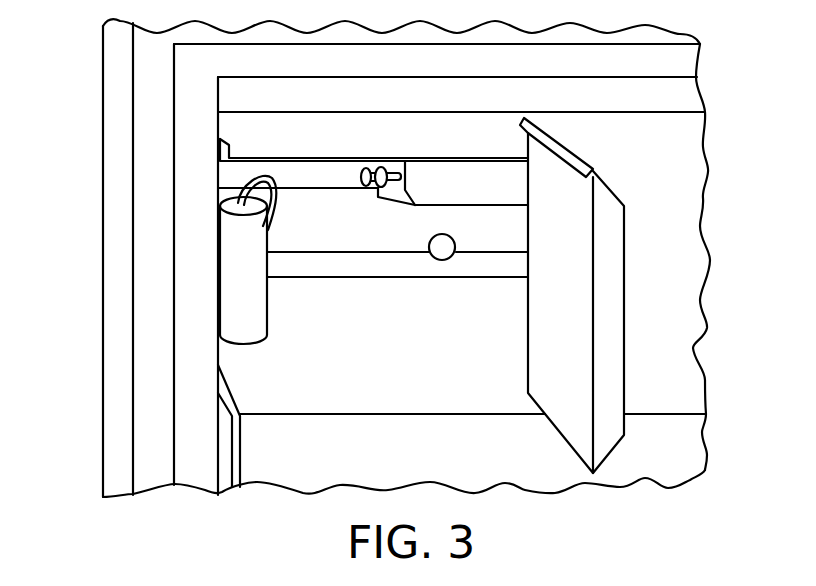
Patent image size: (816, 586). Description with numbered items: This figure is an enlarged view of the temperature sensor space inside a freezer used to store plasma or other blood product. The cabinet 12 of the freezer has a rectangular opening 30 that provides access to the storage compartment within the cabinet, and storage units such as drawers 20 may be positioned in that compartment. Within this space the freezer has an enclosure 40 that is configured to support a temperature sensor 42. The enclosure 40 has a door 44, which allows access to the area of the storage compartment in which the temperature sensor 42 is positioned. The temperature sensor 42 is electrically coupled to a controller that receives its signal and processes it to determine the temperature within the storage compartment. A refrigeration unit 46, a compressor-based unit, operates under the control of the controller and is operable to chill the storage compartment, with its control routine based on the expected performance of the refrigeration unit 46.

The cabinet 12 is at (150, 38).
The drawers 20 is at (258, 443).
The rectangular opening 30 is at (218, 173).
The enclosure 40 is at (680, 148).
The temperature sensor 42 is at (232, 247).
The door 44 is at (612, 340).
The refrigeration unit 46 is at (673, 231).